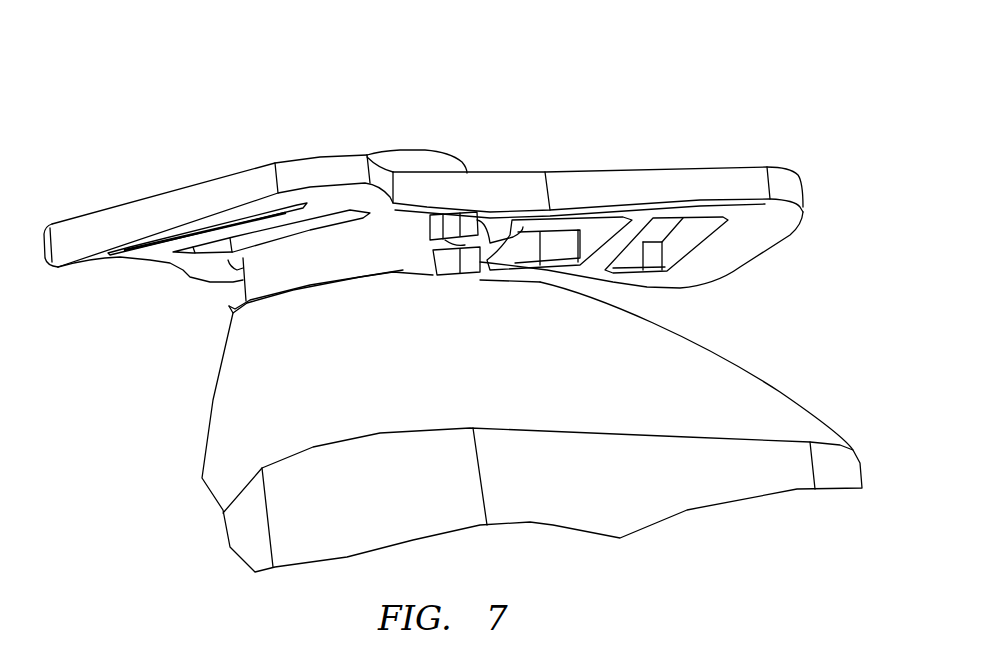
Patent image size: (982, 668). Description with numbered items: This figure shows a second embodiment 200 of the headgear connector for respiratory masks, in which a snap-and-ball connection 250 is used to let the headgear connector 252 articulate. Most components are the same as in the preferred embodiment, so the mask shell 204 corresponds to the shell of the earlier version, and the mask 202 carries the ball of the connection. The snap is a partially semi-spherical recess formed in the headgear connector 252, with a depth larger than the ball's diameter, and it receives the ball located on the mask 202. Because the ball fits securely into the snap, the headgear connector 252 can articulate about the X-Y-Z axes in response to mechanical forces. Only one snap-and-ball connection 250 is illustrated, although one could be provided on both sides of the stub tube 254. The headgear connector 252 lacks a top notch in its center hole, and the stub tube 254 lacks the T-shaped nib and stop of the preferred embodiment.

The second embodiment 200 is at (453, 308).
The mask 202 is at (500, 415).
The mask shell 204 is at (267, 385).
The snap-and-ball connection 250 is at (423, 250).
The headgear connector 252 is at (115, 202).
The stub tube 254 is at (450, 165).